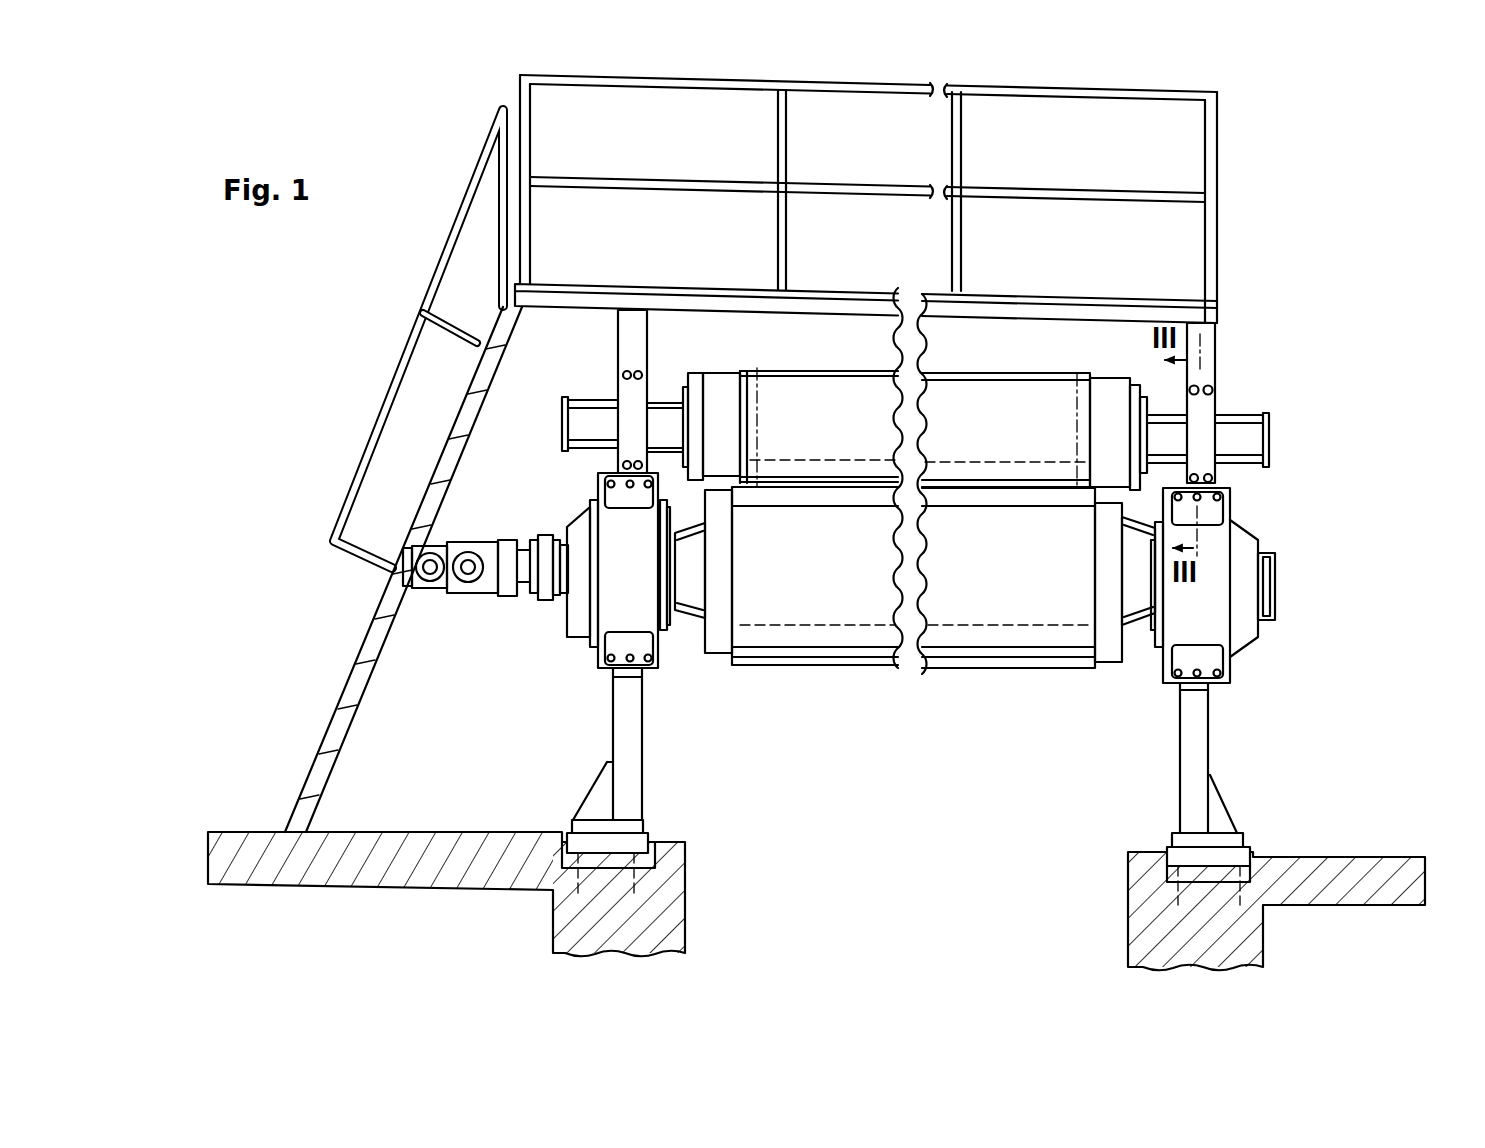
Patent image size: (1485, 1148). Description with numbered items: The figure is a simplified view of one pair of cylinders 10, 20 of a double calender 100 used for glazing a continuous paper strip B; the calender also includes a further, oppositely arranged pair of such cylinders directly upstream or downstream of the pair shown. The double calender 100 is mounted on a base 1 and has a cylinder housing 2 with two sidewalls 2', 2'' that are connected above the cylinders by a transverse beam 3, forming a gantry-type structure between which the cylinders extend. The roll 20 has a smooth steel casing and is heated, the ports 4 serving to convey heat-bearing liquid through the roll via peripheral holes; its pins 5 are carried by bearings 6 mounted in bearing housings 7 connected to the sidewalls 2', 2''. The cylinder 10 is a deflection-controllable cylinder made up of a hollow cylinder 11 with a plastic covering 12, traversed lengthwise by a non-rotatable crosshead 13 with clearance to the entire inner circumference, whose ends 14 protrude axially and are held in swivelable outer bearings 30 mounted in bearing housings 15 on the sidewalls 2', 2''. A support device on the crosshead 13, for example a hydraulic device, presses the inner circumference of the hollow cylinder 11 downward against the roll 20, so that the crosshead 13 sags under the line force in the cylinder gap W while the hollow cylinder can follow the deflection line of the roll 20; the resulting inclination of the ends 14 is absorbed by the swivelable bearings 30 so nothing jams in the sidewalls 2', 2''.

The base 1 is at (678, 936).
The cylinder housing 2 is at (593, 744).
The sidewall 2' is at (642, 825).
The sidewall 2'' is at (1177, 794).
The transverse beam 3 is at (703, 317).
The ports for heat-bearing liquid 4 is at (461, 602).
The pins 5 is at (691, 610).
The bearings 6 is at (580, 603).
The bearing housings 7 is at (611, 524).
The cylinder 10 is at (1016, 365).
The hollow cylinder 11 is at (729, 385).
The plastic covering 12 is at (743, 378).
The crosshead 13 is at (671, 386).
The ends of the crosshead 14 is at (597, 404).
The bearing housings 15 is at (627, 427).
The roll 20 is at (991, 675).
The swivelable outer bearings 30 is at (603, 456).
The double calender 100 is at (1256, 289).
The continuous paper strip B is at (1077, 405).
The cylinder gap W is at (722, 485).